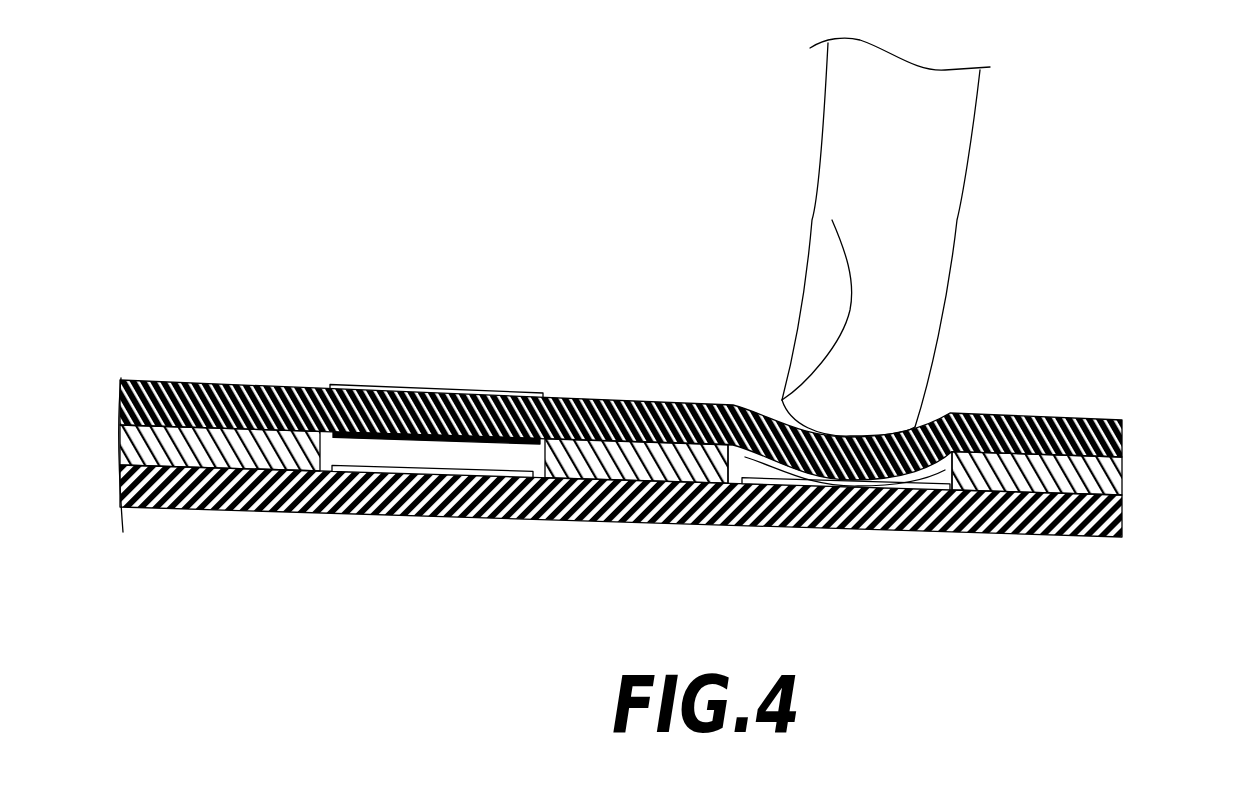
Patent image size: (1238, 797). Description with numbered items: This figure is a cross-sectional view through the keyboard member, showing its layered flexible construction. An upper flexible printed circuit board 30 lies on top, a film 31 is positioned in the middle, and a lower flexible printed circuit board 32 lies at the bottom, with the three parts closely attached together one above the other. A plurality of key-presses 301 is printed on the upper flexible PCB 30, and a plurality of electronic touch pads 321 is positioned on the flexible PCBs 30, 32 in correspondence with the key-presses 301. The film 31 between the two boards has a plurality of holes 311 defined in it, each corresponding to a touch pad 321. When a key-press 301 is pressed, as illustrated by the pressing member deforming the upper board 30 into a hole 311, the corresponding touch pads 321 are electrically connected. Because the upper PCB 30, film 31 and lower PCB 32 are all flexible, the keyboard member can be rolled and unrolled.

The upper flexible printed circuit board 30 is at (642, 403).
The key-press 301 is at (432, 390).
The film 31 is at (1126, 462).
The hole 311 is at (942, 475).
The lower flexible printed circuit board 32 is at (238, 507).
The electronic touch pad 321 is at (480, 438).